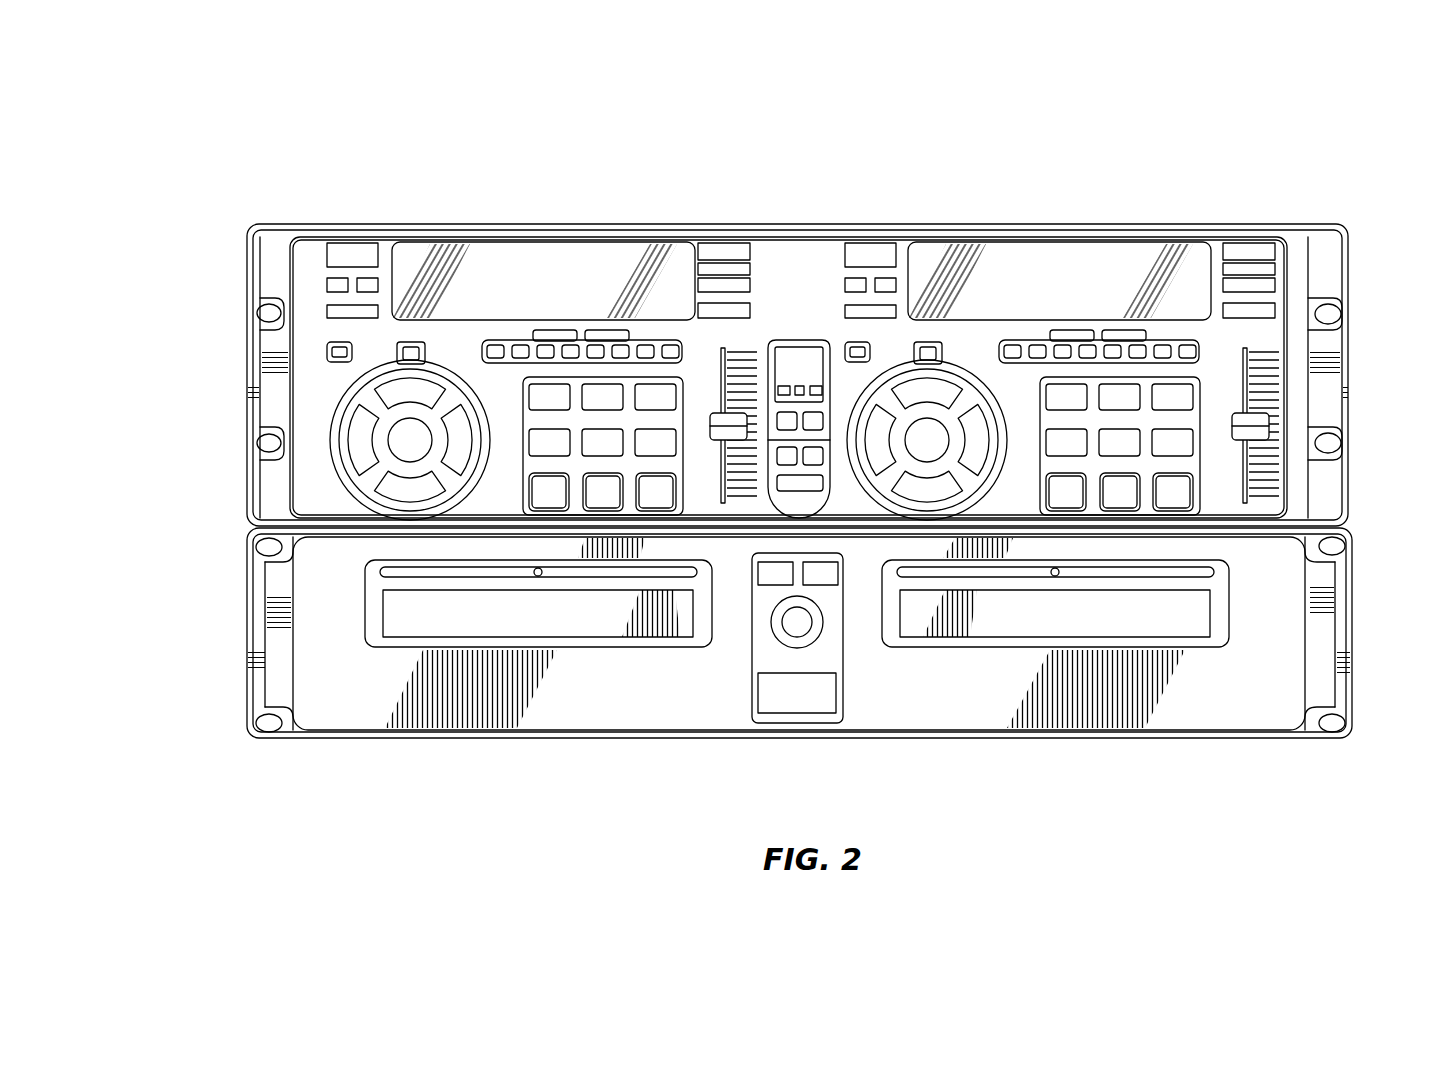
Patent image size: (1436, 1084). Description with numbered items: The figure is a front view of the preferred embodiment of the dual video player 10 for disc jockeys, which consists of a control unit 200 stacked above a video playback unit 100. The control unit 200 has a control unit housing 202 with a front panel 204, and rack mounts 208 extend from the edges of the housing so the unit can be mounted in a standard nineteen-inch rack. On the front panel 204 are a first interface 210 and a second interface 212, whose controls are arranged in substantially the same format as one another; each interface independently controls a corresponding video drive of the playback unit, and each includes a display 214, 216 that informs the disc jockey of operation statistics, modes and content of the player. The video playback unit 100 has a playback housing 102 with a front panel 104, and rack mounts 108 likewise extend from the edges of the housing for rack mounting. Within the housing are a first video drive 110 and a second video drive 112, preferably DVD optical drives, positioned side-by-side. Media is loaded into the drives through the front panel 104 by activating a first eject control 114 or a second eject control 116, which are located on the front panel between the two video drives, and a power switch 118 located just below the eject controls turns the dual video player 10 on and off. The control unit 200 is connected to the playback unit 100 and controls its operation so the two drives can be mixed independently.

The dual video player 10 is at (222, 152).
The video playback unit 100 is at (1236, 745).
The playback housing 102 is at (1165, 740).
The front panel 104 is at (590, 707).
The rack mounts 108 is at (277, 627).
The first video drive 110 is at (462, 622).
The second video drive 112 is at (1032, 615).
The first eject control 114 is at (772, 575).
The second eject control 116 is at (817, 573).
The power switch 118 is at (802, 625).
The control unit 200 is at (1171, 220).
The control unit housing 202 is at (1224, 226).
The front panel 204 is at (790, 258).
The rack mounts 208 is at (262, 350).
The first interface 210 is at (467, 352).
The second interface 212 is at (980, 347).
The display 214 is at (522, 268).
The display 216 is at (1025, 262).